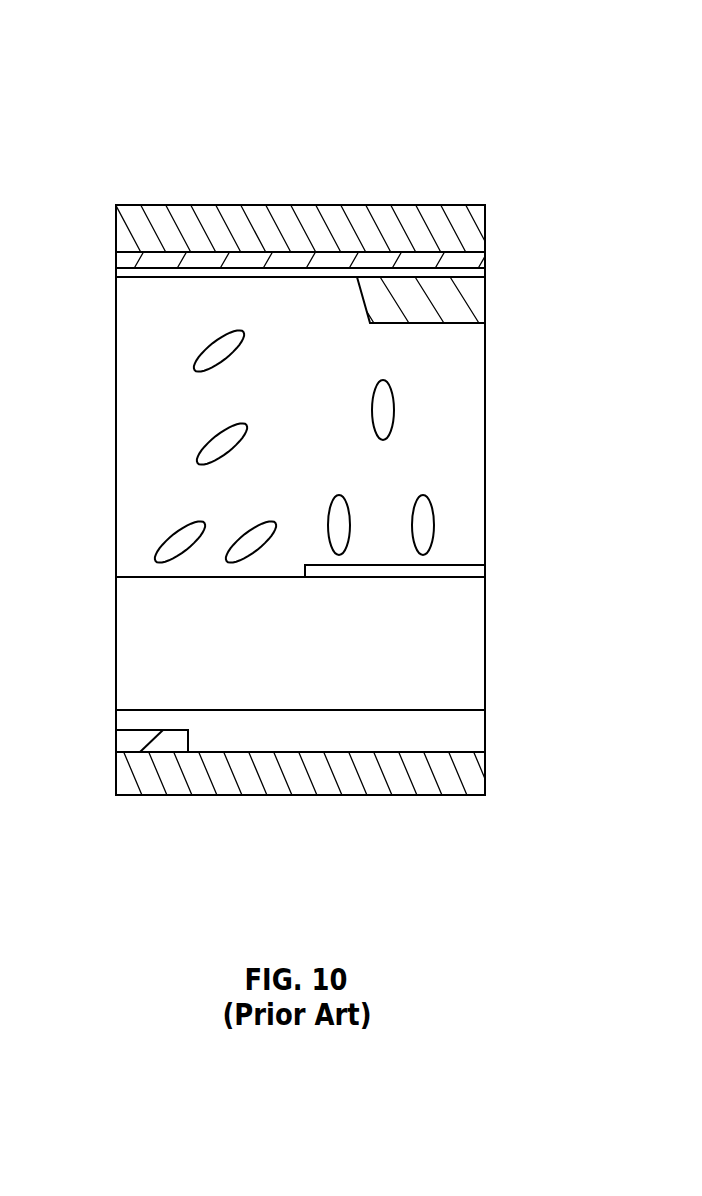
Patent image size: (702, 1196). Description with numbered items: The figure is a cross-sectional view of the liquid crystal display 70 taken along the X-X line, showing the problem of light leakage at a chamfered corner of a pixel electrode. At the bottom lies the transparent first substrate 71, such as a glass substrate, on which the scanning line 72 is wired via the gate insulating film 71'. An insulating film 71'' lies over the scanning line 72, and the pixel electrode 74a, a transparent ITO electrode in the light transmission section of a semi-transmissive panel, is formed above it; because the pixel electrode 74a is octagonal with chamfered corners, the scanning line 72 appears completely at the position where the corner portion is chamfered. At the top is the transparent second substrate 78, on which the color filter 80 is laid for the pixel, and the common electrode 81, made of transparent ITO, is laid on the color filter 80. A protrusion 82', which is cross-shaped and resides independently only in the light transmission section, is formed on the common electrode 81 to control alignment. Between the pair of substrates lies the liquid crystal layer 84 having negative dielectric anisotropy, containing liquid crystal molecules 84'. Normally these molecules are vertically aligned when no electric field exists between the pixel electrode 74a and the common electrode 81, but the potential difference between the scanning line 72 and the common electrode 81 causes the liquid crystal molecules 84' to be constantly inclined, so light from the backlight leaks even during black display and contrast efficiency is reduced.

The liquid crystal display 70 is at (124, 52).
The first substrate 71 is at (300, 816).
The gate insulating film 71' is at (341, 726).
The insulating film 71'' is at (346, 643).
The scanning line 72 is at (128, 740).
The pixel electrode 74a is at (467, 570).
The second substrate 78 is at (358, 207).
The color filter 80 is at (262, 258).
The common electrode 81 is at (481, 270).
The protrusion 82' is at (467, 310).
The liquid crystal layer 84 is at (300, 427).
The liquid crystal molecules 84' is at (232, 467).